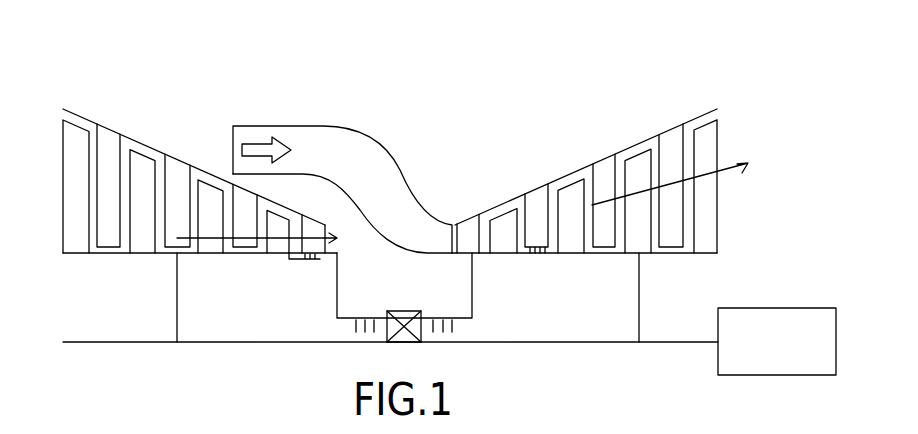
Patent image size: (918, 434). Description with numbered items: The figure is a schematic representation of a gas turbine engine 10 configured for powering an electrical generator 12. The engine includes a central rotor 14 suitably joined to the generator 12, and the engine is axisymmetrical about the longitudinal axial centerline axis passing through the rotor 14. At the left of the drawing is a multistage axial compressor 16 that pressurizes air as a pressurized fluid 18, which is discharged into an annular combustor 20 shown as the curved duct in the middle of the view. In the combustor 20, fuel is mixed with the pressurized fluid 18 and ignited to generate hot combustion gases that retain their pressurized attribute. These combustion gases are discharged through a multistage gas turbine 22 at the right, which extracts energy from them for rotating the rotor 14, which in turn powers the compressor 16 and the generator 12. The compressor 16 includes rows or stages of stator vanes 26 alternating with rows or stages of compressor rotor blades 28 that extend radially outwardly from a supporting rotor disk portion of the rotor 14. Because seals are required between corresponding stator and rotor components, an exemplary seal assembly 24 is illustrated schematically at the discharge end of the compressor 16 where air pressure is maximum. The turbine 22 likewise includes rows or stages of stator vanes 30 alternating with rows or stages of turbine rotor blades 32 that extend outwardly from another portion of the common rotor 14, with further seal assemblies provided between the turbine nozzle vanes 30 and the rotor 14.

The gas turbine engine 10 is at (207, 128).
The electrical generator 12 is at (788, 353).
The central rotor 14 is at (665, 343).
The multistage axial compressor 16 is at (75, 113).
The pressurized fluid 18 is at (346, 202).
The annular combustor 20 is at (363, 158).
The multistage gas turbine 22 is at (702, 115).
The seal assembly 24 is at (312, 267).
The stator vanes 26 is at (107, 145).
The compressor rotor blades 28 is at (149, 226).
The stator vanes 30 is at (587, 200).
The turbine rotor blades 32 is at (633, 243).